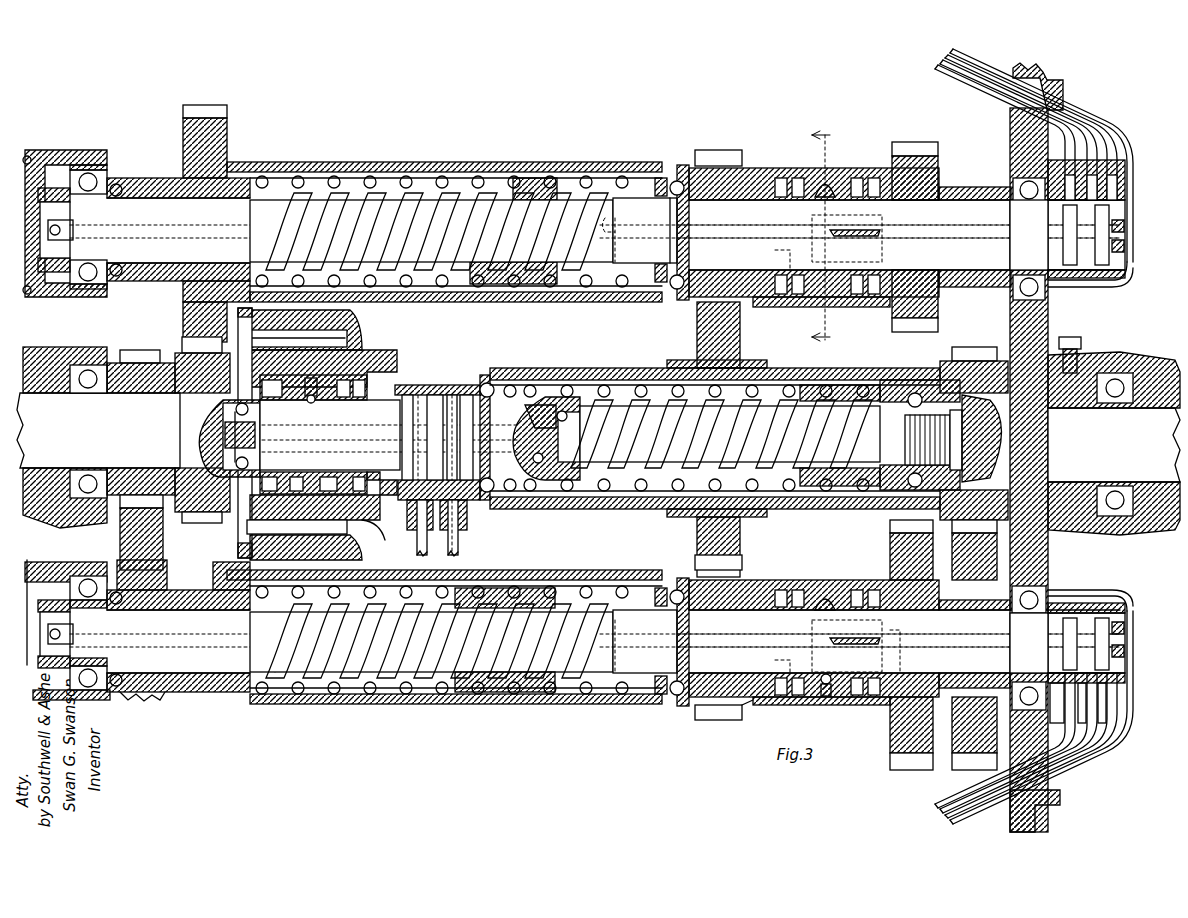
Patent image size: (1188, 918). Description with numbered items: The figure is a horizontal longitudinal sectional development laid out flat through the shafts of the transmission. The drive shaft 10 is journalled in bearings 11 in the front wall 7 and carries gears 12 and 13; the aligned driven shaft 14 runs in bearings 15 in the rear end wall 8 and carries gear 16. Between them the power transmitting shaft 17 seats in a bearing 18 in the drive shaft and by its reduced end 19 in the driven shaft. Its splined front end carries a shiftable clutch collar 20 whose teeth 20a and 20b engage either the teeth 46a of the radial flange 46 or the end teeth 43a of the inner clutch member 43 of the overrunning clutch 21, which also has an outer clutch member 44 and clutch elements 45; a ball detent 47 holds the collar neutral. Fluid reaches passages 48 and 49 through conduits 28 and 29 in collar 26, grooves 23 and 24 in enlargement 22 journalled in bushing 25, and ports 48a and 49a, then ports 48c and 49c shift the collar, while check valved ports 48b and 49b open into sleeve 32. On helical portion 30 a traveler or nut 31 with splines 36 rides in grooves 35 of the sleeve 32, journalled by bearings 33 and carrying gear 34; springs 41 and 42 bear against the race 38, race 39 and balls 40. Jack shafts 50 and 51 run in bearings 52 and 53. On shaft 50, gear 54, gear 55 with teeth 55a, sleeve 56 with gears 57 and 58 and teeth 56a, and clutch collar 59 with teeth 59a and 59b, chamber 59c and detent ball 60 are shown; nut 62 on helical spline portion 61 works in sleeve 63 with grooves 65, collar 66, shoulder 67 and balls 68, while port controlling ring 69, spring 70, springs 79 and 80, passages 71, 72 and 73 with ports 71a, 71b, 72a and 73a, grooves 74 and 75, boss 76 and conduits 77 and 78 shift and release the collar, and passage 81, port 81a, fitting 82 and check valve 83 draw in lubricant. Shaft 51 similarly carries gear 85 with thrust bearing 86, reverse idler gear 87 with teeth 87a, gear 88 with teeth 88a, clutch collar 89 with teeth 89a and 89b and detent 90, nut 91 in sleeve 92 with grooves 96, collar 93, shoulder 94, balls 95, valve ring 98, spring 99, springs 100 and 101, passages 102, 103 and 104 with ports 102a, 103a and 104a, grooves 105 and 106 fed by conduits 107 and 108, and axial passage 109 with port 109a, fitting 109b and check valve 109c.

The front wall 7 is at (88, 305).
The rear end wall 8 is at (1068, 350).
The drive shaft 10 is at (103, 406).
The bearings 11 is at (70, 505).
The gear 12 is at (141, 415).
The gear 13 is at (180, 355).
The driven shaft 14 is at (1144, 476).
The bearings 15 is at (1095, 518).
The gear 16 is at (980, 352).
The power transmitting shaft 17 is at (487, 494).
The bearing 18 is at (222, 410).
The reduced rear end 19 is at (995, 445).
The shiftable clutch collar 20 is at (362, 532).
The clutch teeth 20a is at (295, 477).
The clutch teeth 20b is at (352, 477).
The overrunning clutch 21 is at (340, 548).
The enlargement 22 is at (467, 395).
The annular groove 23 is at (408, 392).
The annular groove 24 is at (436, 392).
The bushing 25 is at (452, 392).
The collar 26 is at (430, 392).
The conduit 28 is at (416, 540).
The conduit 29 is at (460, 540).
The helical portion 30 is at (640, 460).
The traveler or nut 31 is at (780, 380).
The sleeve 32 is at (640, 375).
The bearings 33 is at (487, 383).
The gear 34 is at (697, 330).
The internal grooves 35 is at (606, 385).
The splines 36 is at (812, 385).
The collar or race 38 is at (910, 394).
The race 39 is at (910, 410).
The balls 40 is at (922, 395).
The spring 41 is at (842, 400).
The spring 42 is at (565, 410).
The inner clutch member 43 is at (390, 372).
The end teeth 43a is at (372, 478).
The outer clutch member 44 is at (355, 320).
The clutch elements 45 is at (325, 343).
The radial flange 46 is at (240, 525).
The clutch teeth 46a is at (228, 477).
The spring pressed ball detent 47 is at (309, 400).
The longitudinal passage 48 is at (503, 440).
The port 48a is at (390, 435).
The check valved port 48b is at (556, 405).
The port 48c is at (313, 400).
The longitudinal passage 49 is at (503, 446).
The port 49a is at (454, 533).
The check valved port 49b is at (538, 466).
The port 49c is at (203, 437).
The jack shaft 50 is at (187, 662).
The jack shaft 51 is at (146, 250).
The antifriction bearings 52 is at (100, 176).
The antifriction bearings 53 is at (1025, 290).
The gear 54 is at (163, 544).
The gear 55 is at (968, 740).
The clutch teeth 55a is at (868, 705).
The sleeve 56 is at (790, 580).
The clutch teeth 56a is at (752, 718).
The gear 57 is at (710, 720).
The gear 58 is at (906, 756).
The clutch collar 59 is at (858, 702).
The clutch teeth 59a is at (775, 588).
The clutch teeth 59b is at (872, 588).
The chamber 59c is at (828, 588).
The spring pressed detent ball 60 is at (832, 679).
The helical spline portion 61 is at (567, 612).
The traveler or nut 62 is at (522, 685).
The sleeve 63 is at (306, 704).
The longitudinal grooves 65 is at (512, 585).
The collar 66 is at (672, 700).
The annular shoulder 67 is at (679, 590).
The balls 68 is at (683, 706).
The port controlling ring 69 is at (660, 696).
The spring 70 is at (660, 588).
The longitudinal passage 71 is at (606, 590).
The lateral port 71a is at (630, 658).
The port 71b is at (847, 641).
The longitudinal passage 72 is at (1100, 635).
The lateral port 72a is at (900, 620).
The longitudinal passage 73 is at (1112, 656).
The lateral port 73a is at (775, 666).
The annular groove 74 is at (1080, 600).
The annular groove 75 is at (1100, 671).
The boss 76 is at (1100, 613).
The conduit 77 is at (1060, 760).
The conduit 78 is at (1100, 748).
The spring 79 is at (366, 700).
The spring 80 is at (600, 692).
The longitudinal passage 81 is at (196, 592).
The lateral port 81a is at (262, 620).
The fitting 82 is at (45, 566).
The check valve 83 is at (72, 634).
The gear 85 is at (218, 140).
The antifriction thrust bearing 86 is at (116, 278).
The gear 87 is at (925, 300).
The clutch teeth 87a is at (876, 178).
The gear 88 is at (728, 160).
The clutch teeth 88a is at (770, 172).
The clutch collar 89 is at (808, 300).
The clutch teeth 89a is at (798, 178).
The clutch teeth 89b is at (828, 176).
The spring pressed ball detent 90 is at (414, 205).
The traveler or nut 91 is at (530, 178).
The sleeve 92 is at (458, 165).
The collar 93 is at (672, 300).
The annular shoulder 94 is at (683, 300).
The balls 95 is at (679, 180).
The internal grooves 96 is at (326, 170).
The port controlling valve ring 98 is at (658, 180).
The spring 99 is at (668, 178).
The spring 100 is at (364, 200).
The spring 101 is at (586, 176).
The passage 102 is at (860, 230).
The lateral port 102a is at (630, 248).
The passage 103 is at (1110, 228).
The lateral port 103a is at (847, 232).
The passage 104 is at (1110, 244).
The lateral port 104a is at (775, 261).
The annular groove 105 is at (1070, 282).
The annular groove 106 is at (1075, 211).
The conduit 107 is at (1068, 130).
The conduit 108 is at (1105, 150).
The axial passage 109 is at (200, 226).
The lateral port 109a is at (265, 211).
The fitting 109b is at (81, 254).
The check valve 109c is at (81, 202).